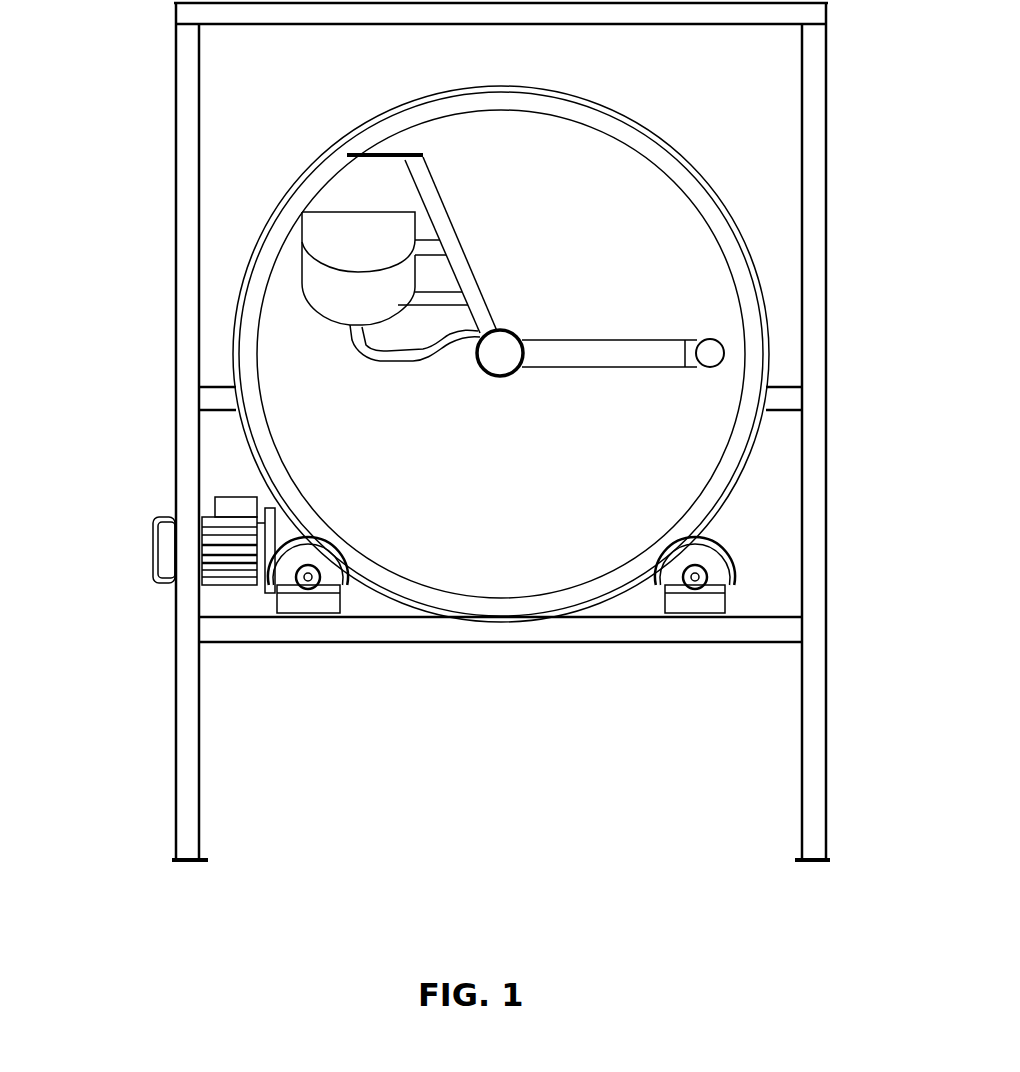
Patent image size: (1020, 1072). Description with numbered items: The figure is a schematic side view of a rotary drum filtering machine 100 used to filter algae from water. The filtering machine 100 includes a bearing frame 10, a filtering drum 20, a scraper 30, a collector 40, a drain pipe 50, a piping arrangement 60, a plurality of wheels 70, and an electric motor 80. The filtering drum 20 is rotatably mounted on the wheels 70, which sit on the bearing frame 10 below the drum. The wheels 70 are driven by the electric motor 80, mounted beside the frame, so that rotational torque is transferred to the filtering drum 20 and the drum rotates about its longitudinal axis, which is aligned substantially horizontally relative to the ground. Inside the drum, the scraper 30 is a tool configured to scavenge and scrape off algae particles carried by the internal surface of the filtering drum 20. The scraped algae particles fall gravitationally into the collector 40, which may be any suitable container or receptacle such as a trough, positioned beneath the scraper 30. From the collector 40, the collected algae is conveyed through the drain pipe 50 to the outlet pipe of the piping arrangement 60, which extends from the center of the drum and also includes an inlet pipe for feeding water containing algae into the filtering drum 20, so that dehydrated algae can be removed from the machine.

The rotary drum filtering machine 100 is at (117, 83).
The bearing frame 10 is at (806, 308).
The filtering drum 20 is at (322, 174).
The scraper 30 is at (378, 153).
The collector 40 is at (333, 247).
The drain pipe 50 is at (405, 372).
The piping arrangement 60 is at (642, 355).
The wheels 70 is at (312, 553).
The electric motor 80 is at (160, 518).